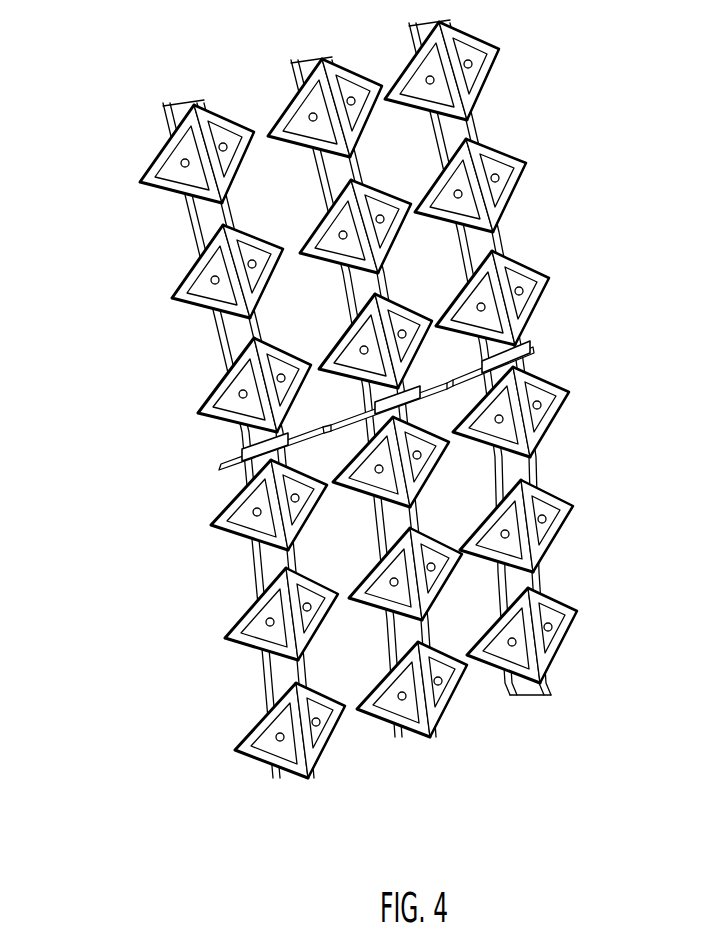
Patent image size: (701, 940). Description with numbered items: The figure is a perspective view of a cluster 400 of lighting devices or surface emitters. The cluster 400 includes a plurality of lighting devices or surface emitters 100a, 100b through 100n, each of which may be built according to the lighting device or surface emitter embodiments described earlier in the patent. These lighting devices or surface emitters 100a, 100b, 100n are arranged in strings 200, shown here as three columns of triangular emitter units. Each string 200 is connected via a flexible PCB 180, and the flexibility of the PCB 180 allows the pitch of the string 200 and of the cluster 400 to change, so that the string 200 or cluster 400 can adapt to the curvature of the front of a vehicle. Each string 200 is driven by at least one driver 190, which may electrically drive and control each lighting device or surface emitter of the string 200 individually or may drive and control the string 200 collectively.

The cluster 400 is at (334, 428).
The lighting device or surface emitter 100a is at (177, 163).
The lighting device or surface emitter 100b is at (223, 110).
The lighting device or surface emitter 100n is at (548, 640).
The flexible PCB 180 is at (225, 342).
The driver 190 is at (262, 446).
The string 200 is at (369, 429).